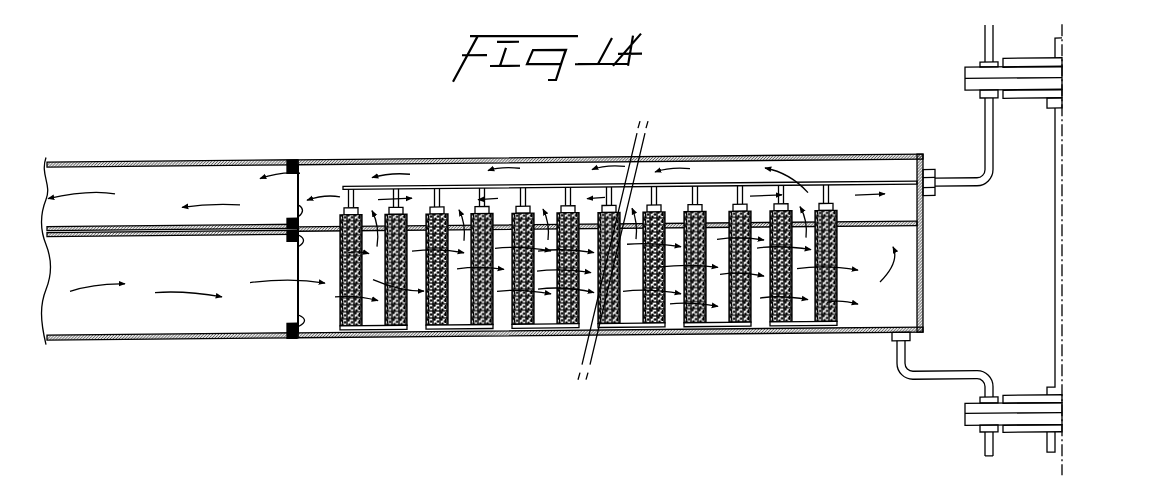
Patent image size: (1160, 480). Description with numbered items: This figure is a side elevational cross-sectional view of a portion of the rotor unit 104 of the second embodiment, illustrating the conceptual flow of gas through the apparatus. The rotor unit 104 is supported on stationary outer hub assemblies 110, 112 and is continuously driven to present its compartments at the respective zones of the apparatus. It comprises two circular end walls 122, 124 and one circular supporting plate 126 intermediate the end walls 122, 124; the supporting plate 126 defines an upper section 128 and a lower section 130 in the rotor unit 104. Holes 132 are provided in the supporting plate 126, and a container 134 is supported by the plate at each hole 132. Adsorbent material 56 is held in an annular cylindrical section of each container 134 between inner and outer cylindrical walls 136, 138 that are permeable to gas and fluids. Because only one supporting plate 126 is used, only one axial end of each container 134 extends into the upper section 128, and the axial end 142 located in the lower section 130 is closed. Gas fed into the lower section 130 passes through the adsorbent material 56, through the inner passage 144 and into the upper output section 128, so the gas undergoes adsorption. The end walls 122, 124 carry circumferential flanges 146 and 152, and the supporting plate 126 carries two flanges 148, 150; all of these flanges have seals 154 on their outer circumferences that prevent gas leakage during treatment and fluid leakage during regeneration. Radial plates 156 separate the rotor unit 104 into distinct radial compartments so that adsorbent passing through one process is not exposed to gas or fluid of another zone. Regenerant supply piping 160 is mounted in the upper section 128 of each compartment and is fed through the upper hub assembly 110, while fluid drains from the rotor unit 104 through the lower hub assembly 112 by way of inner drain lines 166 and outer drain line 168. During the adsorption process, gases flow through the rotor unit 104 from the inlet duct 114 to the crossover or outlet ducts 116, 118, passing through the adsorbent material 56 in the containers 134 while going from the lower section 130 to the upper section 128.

The adsorbent material 56 is at (824, 325).
The rotor unit 104 is at (637, 262).
The outer hub assembly 110 is at (1058, 93).
The outer hub assembly 112 is at (1060, 420).
The inlet duct 114 is at (105, 323).
The crossover or outlet duct 116 is at (115, 161).
The crossover or outlet duct 118 is at (172, 230).
The end wall 122 is at (790, 165).
The end wall 124 is at (788, 342).
The supporting plate 126 is at (921, 234).
The upper section 128 is at (342, 179).
The lower section 130 is at (325, 325).
The holes 132 is at (838, 236).
The container 134 is at (460, 319).
The inner cylindrical wall 136 is at (508, 326).
The outer cylindrical wall 138 is at (553, 317).
The axial end 142 is at (631, 331).
The inner passage 144 is at (717, 206).
The flange 146 is at (309, 165).
The flange 148 is at (300, 218).
The flange 150 is at (300, 243).
The flange 152 is at (300, 322).
The seal 154 is at (290, 345).
The radial plate 156 is at (418, 324).
The regenerant supply piping 160 is at (430, 189).
The inner drain line 166 is at (978, 375).
The outer drain line 168 is at (980, 455).